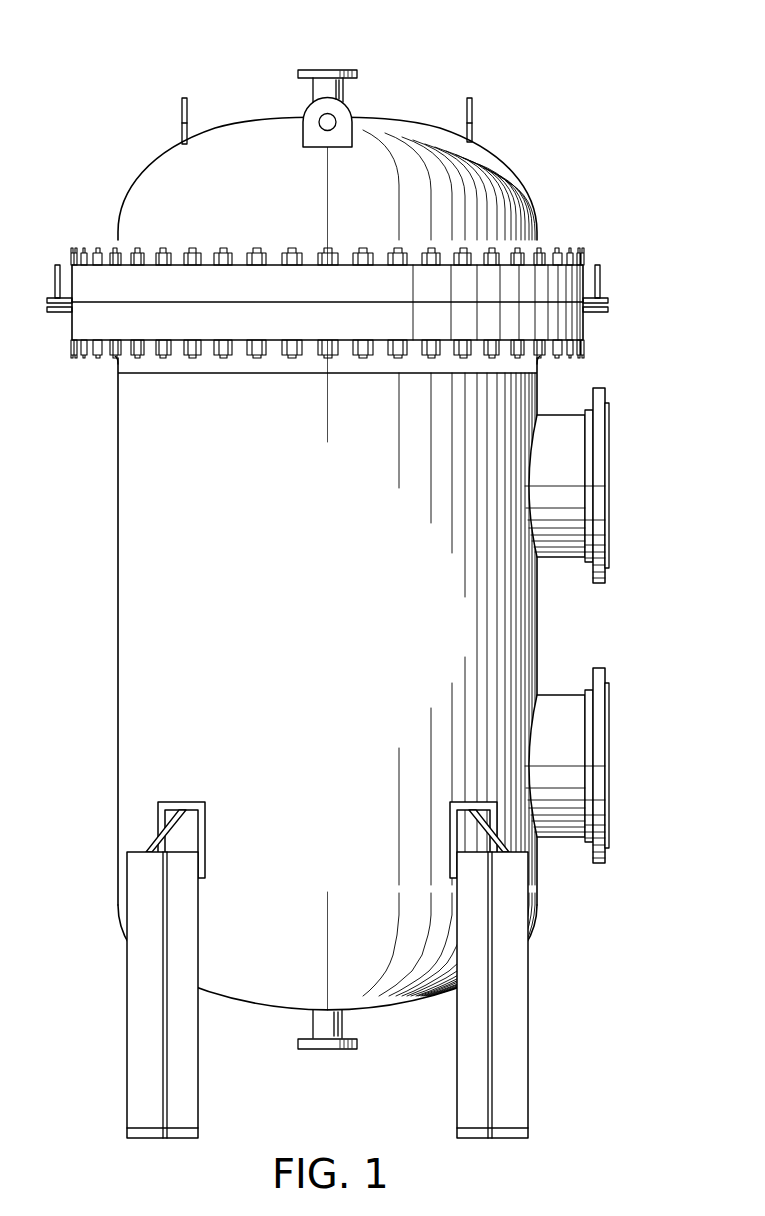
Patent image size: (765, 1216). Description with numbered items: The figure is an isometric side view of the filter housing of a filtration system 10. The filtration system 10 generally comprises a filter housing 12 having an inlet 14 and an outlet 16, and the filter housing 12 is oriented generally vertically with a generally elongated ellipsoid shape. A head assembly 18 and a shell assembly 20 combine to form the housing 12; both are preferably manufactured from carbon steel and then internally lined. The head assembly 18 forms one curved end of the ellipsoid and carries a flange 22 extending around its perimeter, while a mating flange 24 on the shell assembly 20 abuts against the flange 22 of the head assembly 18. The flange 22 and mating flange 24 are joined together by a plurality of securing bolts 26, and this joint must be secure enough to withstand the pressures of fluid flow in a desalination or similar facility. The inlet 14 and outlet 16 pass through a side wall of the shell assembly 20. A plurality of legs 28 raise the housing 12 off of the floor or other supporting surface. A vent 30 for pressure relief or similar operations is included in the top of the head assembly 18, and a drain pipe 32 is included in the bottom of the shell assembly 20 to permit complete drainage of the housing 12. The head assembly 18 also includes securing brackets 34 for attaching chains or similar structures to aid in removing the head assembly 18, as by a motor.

The filtration system 10 is at (53, 65).
The filter housing 12 is at (557, 116).
The inlet 14 is at (612, 443).
The outlet 16 is at (612, 718).
The head assembly 18 is at (137, 176).
The shell assembly 20 is at (117, 548).
The flange 22 is at (590, 264).
The mating flange 24 is at (70, 328).
The securing bolts 26 is at (91, 247).
The legs 28 is at (126, 1028).
The vent 30 is at (327, 69).
The drain pipe 32 is at (327, 1050).
The securing brackets 34 is at (184, 97).